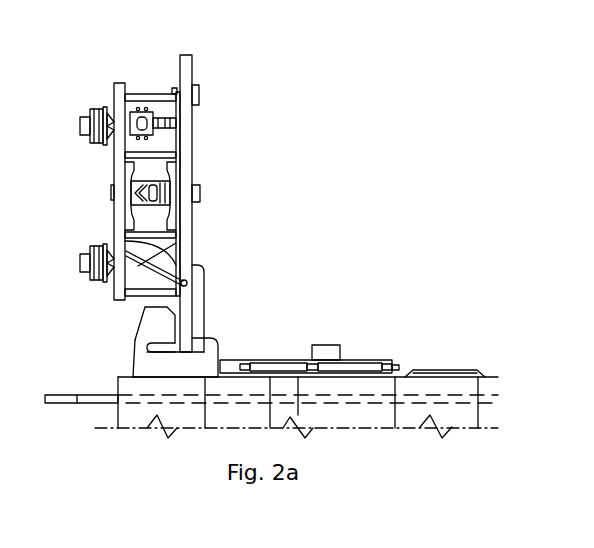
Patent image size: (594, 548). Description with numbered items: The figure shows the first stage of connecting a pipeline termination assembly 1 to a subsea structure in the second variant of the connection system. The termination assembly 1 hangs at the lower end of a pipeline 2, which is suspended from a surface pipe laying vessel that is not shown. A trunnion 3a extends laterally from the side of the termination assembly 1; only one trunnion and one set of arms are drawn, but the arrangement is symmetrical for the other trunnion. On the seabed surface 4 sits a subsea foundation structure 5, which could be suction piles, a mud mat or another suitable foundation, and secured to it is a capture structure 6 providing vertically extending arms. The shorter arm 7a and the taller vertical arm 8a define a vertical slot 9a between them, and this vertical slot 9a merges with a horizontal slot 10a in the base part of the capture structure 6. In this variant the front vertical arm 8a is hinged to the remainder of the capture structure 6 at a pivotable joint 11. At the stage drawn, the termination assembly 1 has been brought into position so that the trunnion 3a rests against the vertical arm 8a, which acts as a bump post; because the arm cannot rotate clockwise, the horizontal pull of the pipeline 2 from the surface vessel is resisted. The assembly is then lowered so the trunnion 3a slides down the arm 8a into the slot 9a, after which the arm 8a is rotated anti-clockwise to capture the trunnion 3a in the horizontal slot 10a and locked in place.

The pipeline termination assembly 1 is at (78, 152).
The pipeline 2 is at (185, 80).
The trunnion 3a is at (197, 258).
The seabed surface 4 is at (485, 393).
The subsea foundation structure 5 is at (370, 338).
The capture structure 6 is at (145, 362).
The arm 7a is at (148, 328).
The vertical arm 8a is at (200, 295).
The vertical slot 9a is at (196, 318).
The horizontal slot 10a is at (148, 350).
The pivotable joint 11 is at (215, 338).